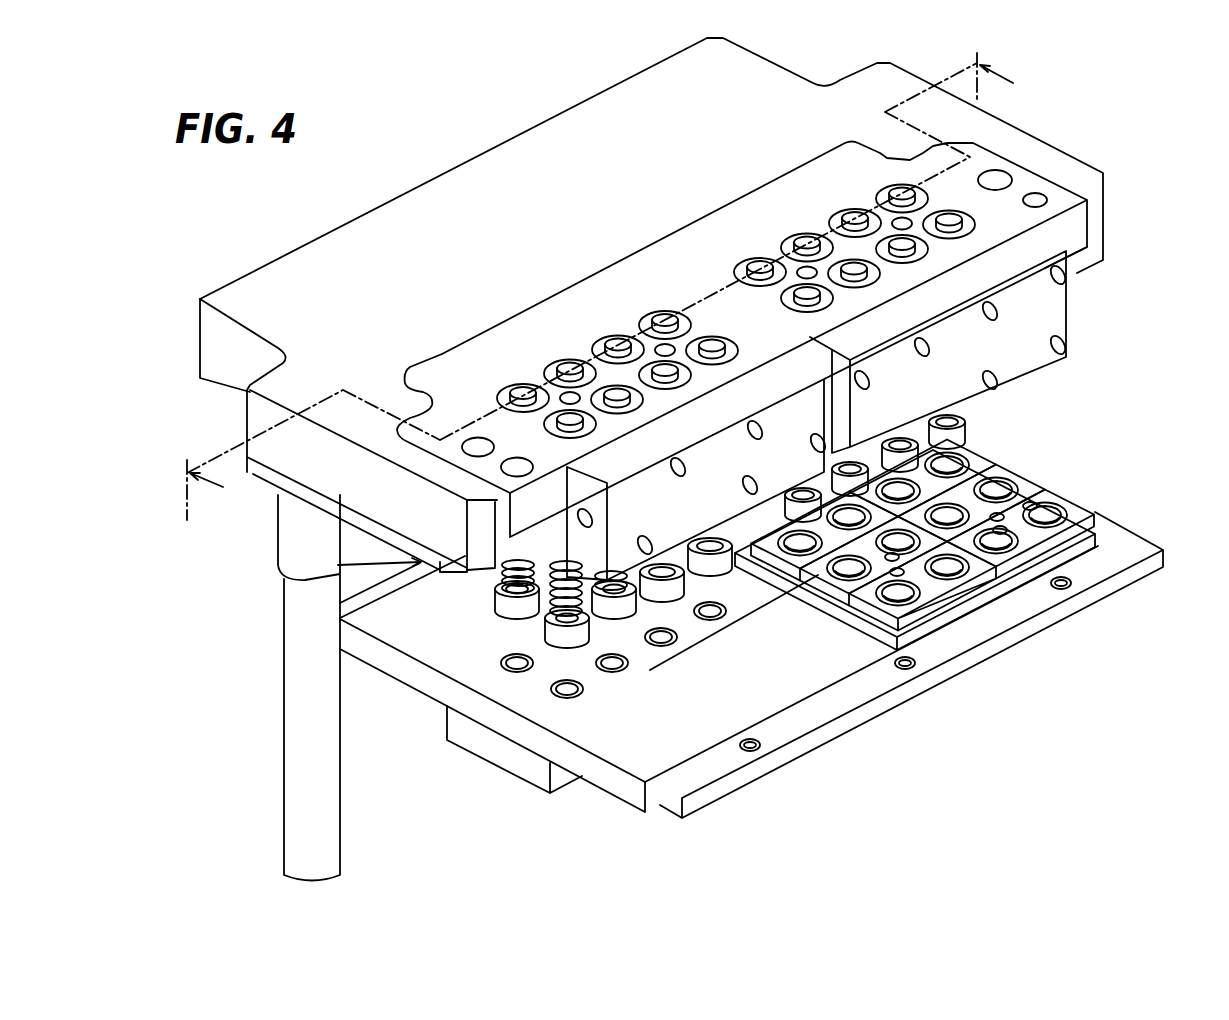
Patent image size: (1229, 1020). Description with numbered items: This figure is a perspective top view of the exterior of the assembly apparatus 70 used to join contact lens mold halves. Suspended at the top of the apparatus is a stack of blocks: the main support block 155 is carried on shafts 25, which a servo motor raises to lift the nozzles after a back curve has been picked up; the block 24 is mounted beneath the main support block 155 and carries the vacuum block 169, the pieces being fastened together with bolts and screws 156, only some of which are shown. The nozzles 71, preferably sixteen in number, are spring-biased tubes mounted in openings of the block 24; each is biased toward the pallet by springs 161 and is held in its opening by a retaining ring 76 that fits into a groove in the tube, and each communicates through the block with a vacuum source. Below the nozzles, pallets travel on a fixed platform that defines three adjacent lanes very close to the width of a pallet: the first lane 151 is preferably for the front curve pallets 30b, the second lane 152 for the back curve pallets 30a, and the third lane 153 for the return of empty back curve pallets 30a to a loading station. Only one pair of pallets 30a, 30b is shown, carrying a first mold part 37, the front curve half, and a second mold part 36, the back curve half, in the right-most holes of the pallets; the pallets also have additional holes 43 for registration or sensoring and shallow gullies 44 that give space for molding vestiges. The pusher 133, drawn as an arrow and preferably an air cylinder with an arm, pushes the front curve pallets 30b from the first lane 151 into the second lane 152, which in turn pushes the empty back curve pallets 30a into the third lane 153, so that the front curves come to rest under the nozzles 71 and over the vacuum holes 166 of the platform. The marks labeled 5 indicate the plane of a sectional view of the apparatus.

The section line 5- 5 is at (609, 286).
The block 24 is at (1023, 183).
The shafts 25 is at (303, 700).
The back curve pallet 30a is at (987, 472).
The front curve pallet 30b is at (1082, 537).
The second mold part 36 is at (953, 462).
The first mold part 37 is at (1087, 512).
The additional holes 43 is at (1015, 520).
The shallow gullies 44 is at (1032, 509).
The assembly apparatus 70 is at (1070, 110).
The nozzles 71 is at (678, 580).
The retaining ring 76 is at (975, 226).
The pusher 133 is at (993, 728).
The first lane 151 is at (637, 743).
The second lane 152 is at (515, 690).
The third lane 153 is at (423, 643).
The main support block 155 is at (485, 178).
The bolts and screws 156 is at (1000, 383).
The springs 161 is at (592, 618).
The vacuum holes 166 is at (570, 697).
The vacuum block 169 is at (1030, 322).